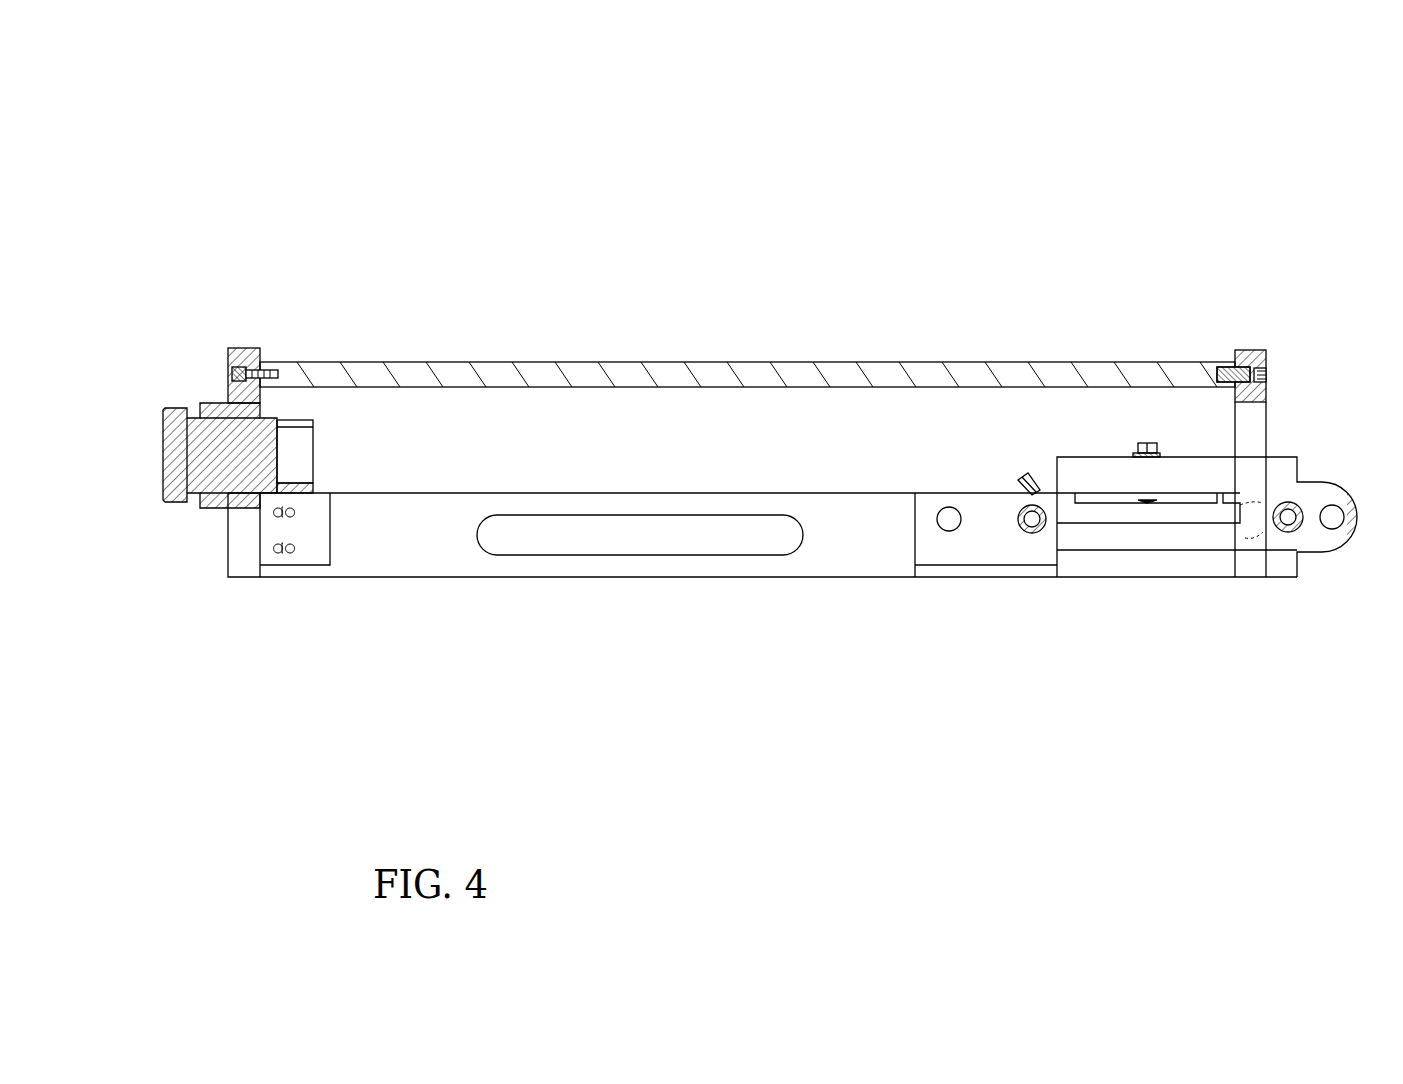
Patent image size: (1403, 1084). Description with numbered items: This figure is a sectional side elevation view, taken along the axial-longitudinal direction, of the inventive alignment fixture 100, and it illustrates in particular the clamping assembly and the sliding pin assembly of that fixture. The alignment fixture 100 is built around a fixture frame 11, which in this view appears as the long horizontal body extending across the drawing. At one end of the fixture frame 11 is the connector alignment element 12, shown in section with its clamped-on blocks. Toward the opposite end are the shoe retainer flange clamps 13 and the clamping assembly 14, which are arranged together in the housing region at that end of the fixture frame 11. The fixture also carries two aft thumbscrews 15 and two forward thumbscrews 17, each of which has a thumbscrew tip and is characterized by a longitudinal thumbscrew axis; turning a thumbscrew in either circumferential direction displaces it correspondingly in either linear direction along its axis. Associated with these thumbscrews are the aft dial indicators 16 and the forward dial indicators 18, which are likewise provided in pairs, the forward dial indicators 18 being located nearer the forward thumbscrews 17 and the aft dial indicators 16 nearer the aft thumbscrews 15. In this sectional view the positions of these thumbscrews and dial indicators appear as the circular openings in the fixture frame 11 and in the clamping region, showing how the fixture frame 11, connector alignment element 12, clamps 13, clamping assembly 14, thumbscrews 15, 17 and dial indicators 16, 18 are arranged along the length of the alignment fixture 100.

The alignment fixture 100 is at (589, 246).
The fixture frame 11 is at (430, 545).
The connector alignment element 12 is at (205, 433).
The shoe retainer flange clamps 13 is at (1180, 497).
The clamping assembly 14 is at (1090, 471).
The aft thumbscrews 15 is at (1332, 530).
The aft dial indicators 16 is at (1288, 532).
The forward thumbscrews 17 is at (949, 531).
The forward dial indicators 18 is at (1033, 533).